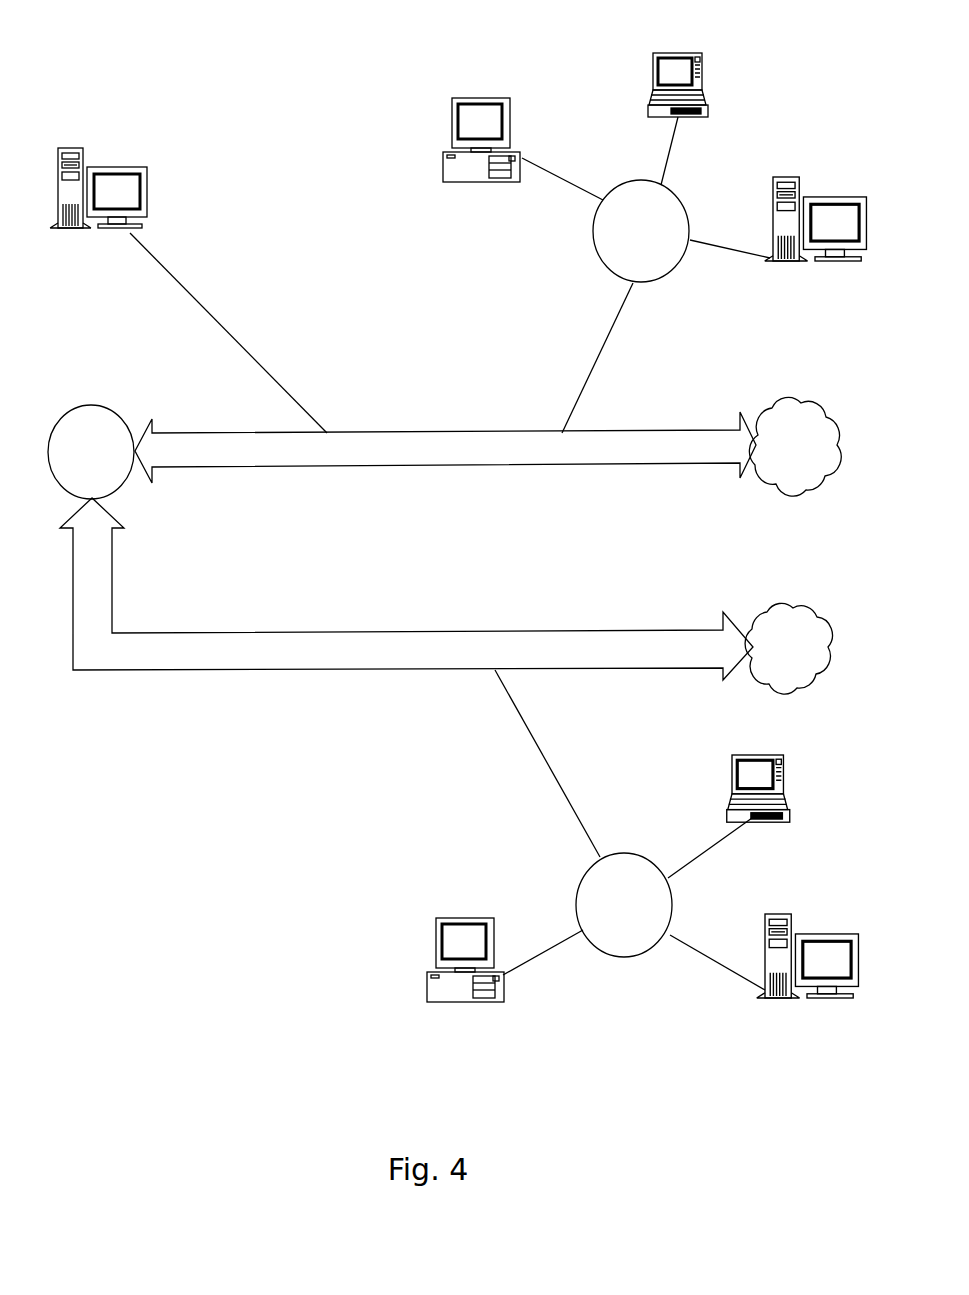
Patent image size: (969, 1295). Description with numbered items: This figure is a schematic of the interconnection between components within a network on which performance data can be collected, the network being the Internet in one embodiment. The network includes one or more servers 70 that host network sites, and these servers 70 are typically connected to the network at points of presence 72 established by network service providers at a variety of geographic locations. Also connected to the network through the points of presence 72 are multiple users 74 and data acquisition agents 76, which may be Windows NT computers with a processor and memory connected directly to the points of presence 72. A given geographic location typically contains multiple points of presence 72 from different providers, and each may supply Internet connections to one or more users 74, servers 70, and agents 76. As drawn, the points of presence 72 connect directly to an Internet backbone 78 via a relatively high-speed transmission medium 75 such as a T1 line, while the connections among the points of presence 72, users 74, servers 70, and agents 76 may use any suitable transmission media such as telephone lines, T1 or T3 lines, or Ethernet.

The server 70 is at (136, 170).
The point of presence 72 is at (670, 214).
The user 74 is at (683, 53).
The high-speed transmission medium 75 is at (598, 360).
The data acquisition agent 76 is at (496, 104).
The Internet backbone 78 is at (420, 467).